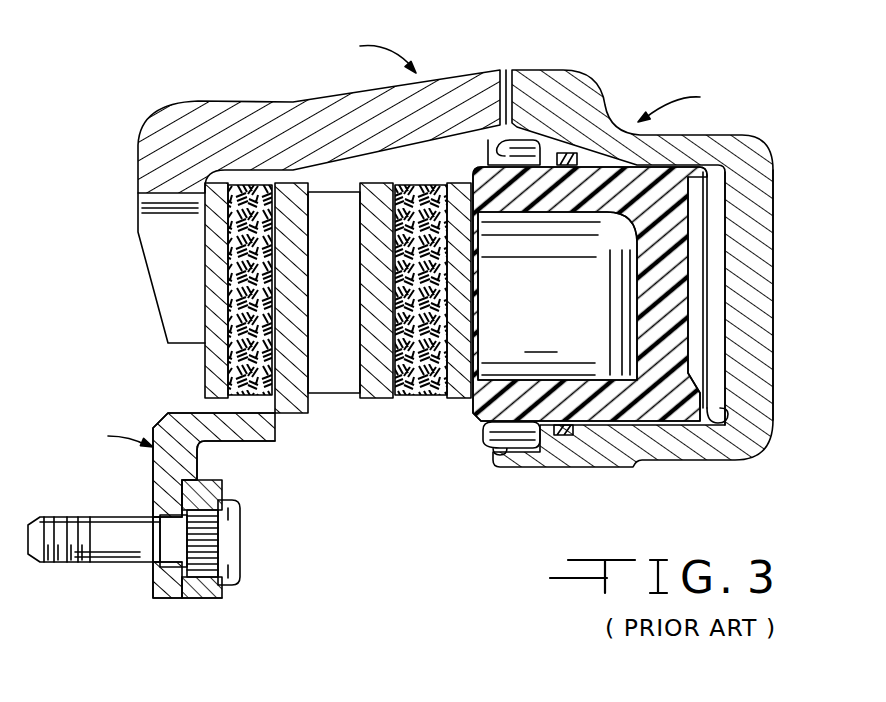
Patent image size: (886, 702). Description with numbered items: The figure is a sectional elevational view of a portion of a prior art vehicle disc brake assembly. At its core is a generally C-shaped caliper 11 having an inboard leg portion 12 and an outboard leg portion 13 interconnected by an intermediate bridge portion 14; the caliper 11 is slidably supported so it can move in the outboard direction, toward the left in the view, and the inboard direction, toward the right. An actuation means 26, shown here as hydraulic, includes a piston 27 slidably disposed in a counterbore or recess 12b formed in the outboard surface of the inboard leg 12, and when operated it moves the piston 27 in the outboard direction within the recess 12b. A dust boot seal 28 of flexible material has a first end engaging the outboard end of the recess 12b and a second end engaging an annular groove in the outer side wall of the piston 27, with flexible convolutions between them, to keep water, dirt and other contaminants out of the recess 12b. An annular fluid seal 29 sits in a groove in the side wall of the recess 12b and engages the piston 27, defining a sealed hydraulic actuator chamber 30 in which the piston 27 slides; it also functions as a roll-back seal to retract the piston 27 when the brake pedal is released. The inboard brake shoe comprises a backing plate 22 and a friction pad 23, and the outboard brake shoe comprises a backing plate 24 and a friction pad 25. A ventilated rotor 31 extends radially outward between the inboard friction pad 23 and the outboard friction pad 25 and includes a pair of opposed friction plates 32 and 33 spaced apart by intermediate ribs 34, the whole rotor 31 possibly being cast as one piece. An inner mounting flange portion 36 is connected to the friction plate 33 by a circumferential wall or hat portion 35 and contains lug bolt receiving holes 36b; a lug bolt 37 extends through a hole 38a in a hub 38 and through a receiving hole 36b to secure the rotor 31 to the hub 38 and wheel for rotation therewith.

The caliper 11 is at (366, 51).
The inboard leg portion 12 is at (772, 172).
The recess 12b is at (740, 425).
The outboard leg portion 13 is at (158, 178).
The intermediate bridge portion 14 is at (560, 96).
The backing plate 22 is at (463, 193).
The friction pad 23 is at (410, 396).
The backing plate 24 is at (207, 353).
The friction pad 25 is at (240, 394).
The actuation means 26 is at (694, 97).
The piston 27 is at (530, 393).
The dust boot seal 28 is at (493, 446).
The fluid seal 29 is at (560, 430).
The hydraulic actuator chamber 30 is at (718, 283).
The rotor 31 is at (165, 505).
The friction plate 32 is at (377, 398).
The friction plate 33 is at (288, 397).
The intermediate ribs 34 is at (333, 387).
The hat portion 35 is at (224, 432).
The inner mounting flange portion 36 is at (160, 481).
The lug bolt receiving holes 36b is at (157, 553).
The lug bolt 37 is at (112, 570).
The hub 38 is at (223, 594).
The hole 38a is at (205, 521).